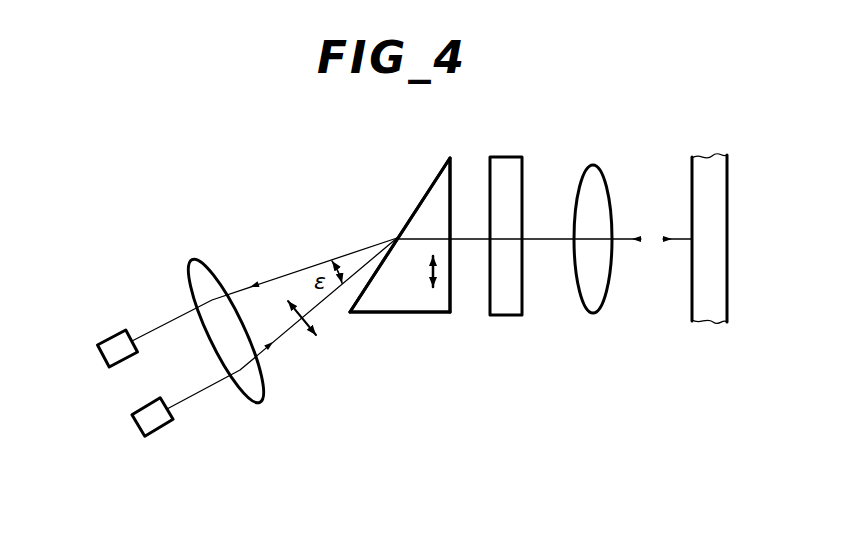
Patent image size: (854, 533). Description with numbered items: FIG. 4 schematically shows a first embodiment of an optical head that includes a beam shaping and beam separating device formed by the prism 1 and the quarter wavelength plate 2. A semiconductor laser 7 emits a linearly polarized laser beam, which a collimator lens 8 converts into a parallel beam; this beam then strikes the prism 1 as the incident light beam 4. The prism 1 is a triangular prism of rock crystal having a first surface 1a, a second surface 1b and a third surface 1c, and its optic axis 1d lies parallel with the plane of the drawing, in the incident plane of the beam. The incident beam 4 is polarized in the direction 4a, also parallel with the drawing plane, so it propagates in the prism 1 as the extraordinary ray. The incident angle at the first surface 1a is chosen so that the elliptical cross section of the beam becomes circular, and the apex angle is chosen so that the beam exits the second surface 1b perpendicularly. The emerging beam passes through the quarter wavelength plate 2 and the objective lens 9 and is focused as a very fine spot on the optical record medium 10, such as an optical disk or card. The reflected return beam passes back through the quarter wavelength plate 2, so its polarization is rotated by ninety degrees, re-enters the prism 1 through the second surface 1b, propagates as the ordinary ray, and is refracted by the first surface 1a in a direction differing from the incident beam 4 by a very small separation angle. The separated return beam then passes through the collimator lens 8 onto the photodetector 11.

The prism 1 is at (418, 330).
The first surface 1a is at (420, 200).
The second surface 1b is at (452, 197).
The third surface 1c is at (387, 315).
The optic axis 1d is at (437, 272).
The quarter wavelength plate 2 is at (513, 318).
The incident light beam 4 is at (210, 383).
The polarizing direction 4a is at (303, 327).
The semiconductor laser 7 is at (163, 438).
The collimator lens 8 is at (194, 258).
The objective lens 9 is at (595, 313).
The optical record medium 10 is at (712, 325).
The photodetector 11 is at (114, 330).